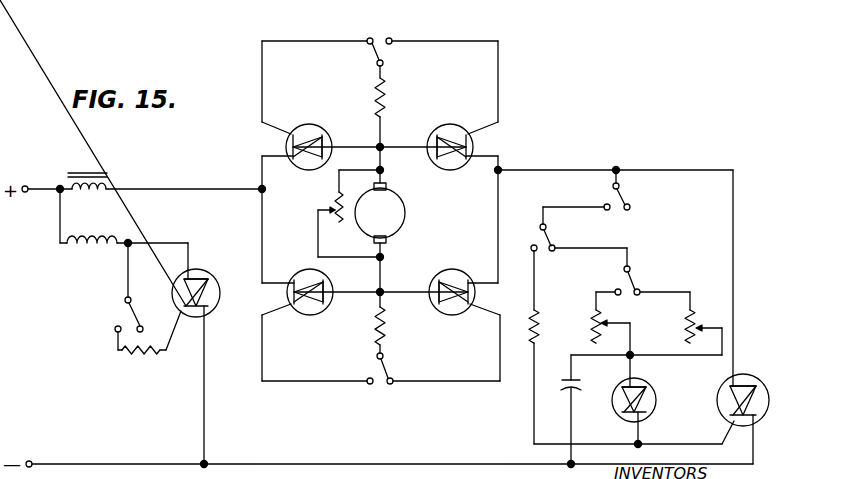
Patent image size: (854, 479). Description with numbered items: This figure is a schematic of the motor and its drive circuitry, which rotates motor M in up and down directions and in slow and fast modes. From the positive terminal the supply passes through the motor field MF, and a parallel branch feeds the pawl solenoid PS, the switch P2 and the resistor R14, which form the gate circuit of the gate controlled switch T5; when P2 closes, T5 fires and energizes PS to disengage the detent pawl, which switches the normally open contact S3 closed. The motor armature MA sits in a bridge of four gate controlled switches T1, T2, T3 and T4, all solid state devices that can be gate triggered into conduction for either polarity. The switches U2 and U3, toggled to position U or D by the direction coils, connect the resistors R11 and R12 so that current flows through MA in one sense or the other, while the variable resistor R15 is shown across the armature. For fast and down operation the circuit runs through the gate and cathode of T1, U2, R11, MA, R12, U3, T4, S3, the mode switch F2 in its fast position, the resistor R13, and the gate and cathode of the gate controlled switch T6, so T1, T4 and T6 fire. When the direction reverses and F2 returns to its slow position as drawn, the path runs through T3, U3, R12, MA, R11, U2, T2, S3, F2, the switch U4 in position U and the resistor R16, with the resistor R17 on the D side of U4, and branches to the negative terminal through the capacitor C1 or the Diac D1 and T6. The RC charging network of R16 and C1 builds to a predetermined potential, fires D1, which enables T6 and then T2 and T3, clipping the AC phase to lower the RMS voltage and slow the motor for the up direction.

The motor field MF is at (161, 194).
The pawl solenoid PS is at (124, 216).
The gate controlled switch T5 is at (111, 232).
The switch P2 is at (121, 287).
The resistor R14 is at (149, 345).
The switch U2 is at (378, 44).
The resistor R11 is at (398, 124).
The gate controlled switch T1 is at (321, 134).
The gate controlled switch T2 is at (439, 134).
The motor armature MA is at (393, 227).
The resistor R15 is at (343, 213).
The gate controlled switch T3 is at (321, 304).
The gate controlled switch T4 is at (440, 304).
The resistor R12 is at (399, 322).
The switch U3 is at (380, 379).
The switch contact S3 is at (586, 202).
The switch F2 is at (546, 237).
The resistor R13 is at (625, 347).
The switch U4 is at (608, 280).
The resistor R16 is at (612, 323).
The resistor R17 is at (650, 323).
The capacitor C1 is at (579, 409).
The Diac D1 is at (640, 399).
The gate controlled switch T6 is at (739, 317).